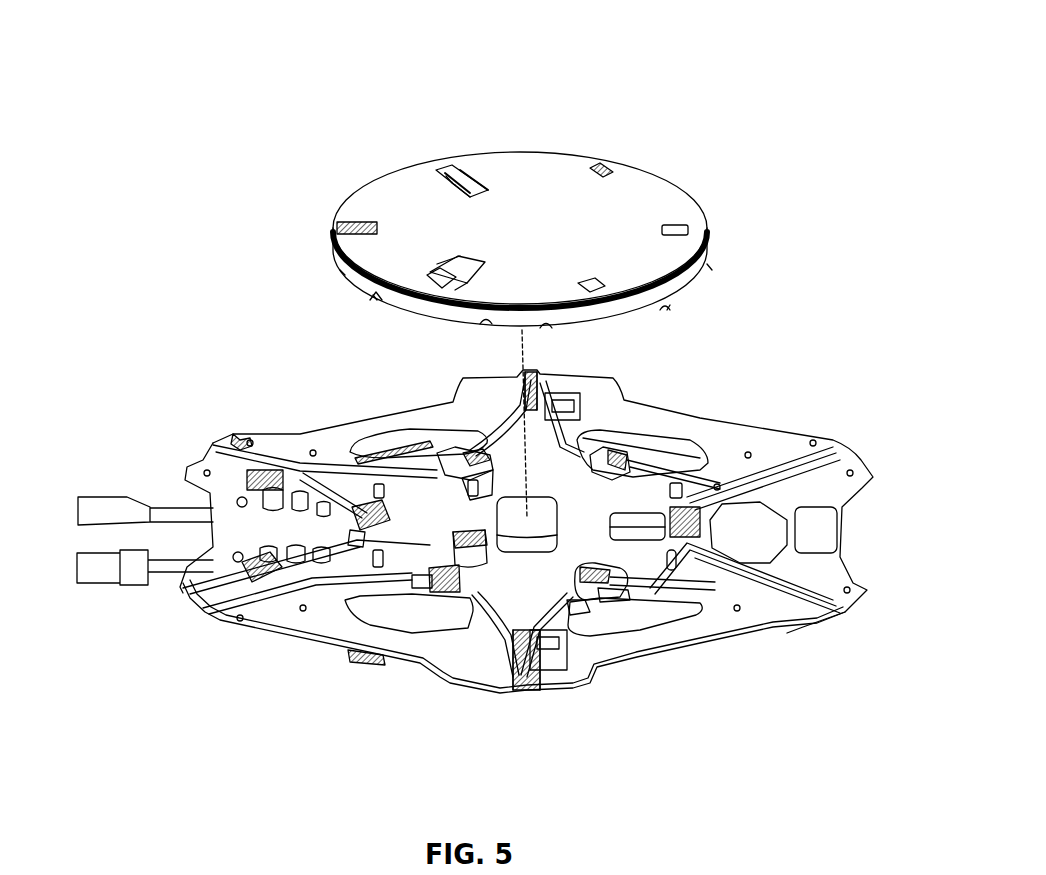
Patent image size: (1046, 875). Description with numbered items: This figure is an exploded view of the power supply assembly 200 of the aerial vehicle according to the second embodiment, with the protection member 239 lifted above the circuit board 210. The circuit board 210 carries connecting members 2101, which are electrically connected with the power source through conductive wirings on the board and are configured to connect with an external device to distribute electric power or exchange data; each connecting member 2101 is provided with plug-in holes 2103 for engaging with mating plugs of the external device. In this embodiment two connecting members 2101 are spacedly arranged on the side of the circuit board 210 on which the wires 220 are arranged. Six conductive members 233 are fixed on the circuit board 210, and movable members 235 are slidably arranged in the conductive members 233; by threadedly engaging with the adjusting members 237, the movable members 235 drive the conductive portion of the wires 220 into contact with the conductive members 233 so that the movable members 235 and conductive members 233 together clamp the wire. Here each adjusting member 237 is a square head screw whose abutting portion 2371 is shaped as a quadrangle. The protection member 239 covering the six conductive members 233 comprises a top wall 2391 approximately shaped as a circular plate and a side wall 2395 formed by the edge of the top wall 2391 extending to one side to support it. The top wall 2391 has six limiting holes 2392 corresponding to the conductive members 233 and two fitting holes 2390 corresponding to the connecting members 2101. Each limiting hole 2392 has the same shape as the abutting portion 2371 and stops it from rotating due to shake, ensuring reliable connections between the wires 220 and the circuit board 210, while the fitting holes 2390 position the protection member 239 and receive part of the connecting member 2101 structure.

The power supply assembly 200 is at (338, 46).
The circuit board 210 is at (657, 427).
The connecting member 2101 is at (400, 465).
The plug-in hole 2103 is at (473, 450).
The wire 220 is at (780, 597).
The conductive member 233 is at (613, 567).
The movable member 235 is at (475, 600).
The adjusting member 237 is at (643, 572).
The abutting portion 2371 is at (573, 592).
The protection member 239 is at (830, 145).
The fitting hole 2390 is at (483, 182).
The top wall 2391 is at (647, 207).
The limiting hole 2392 is at (603, 163).
The side wall 2395 is at (680, 277).